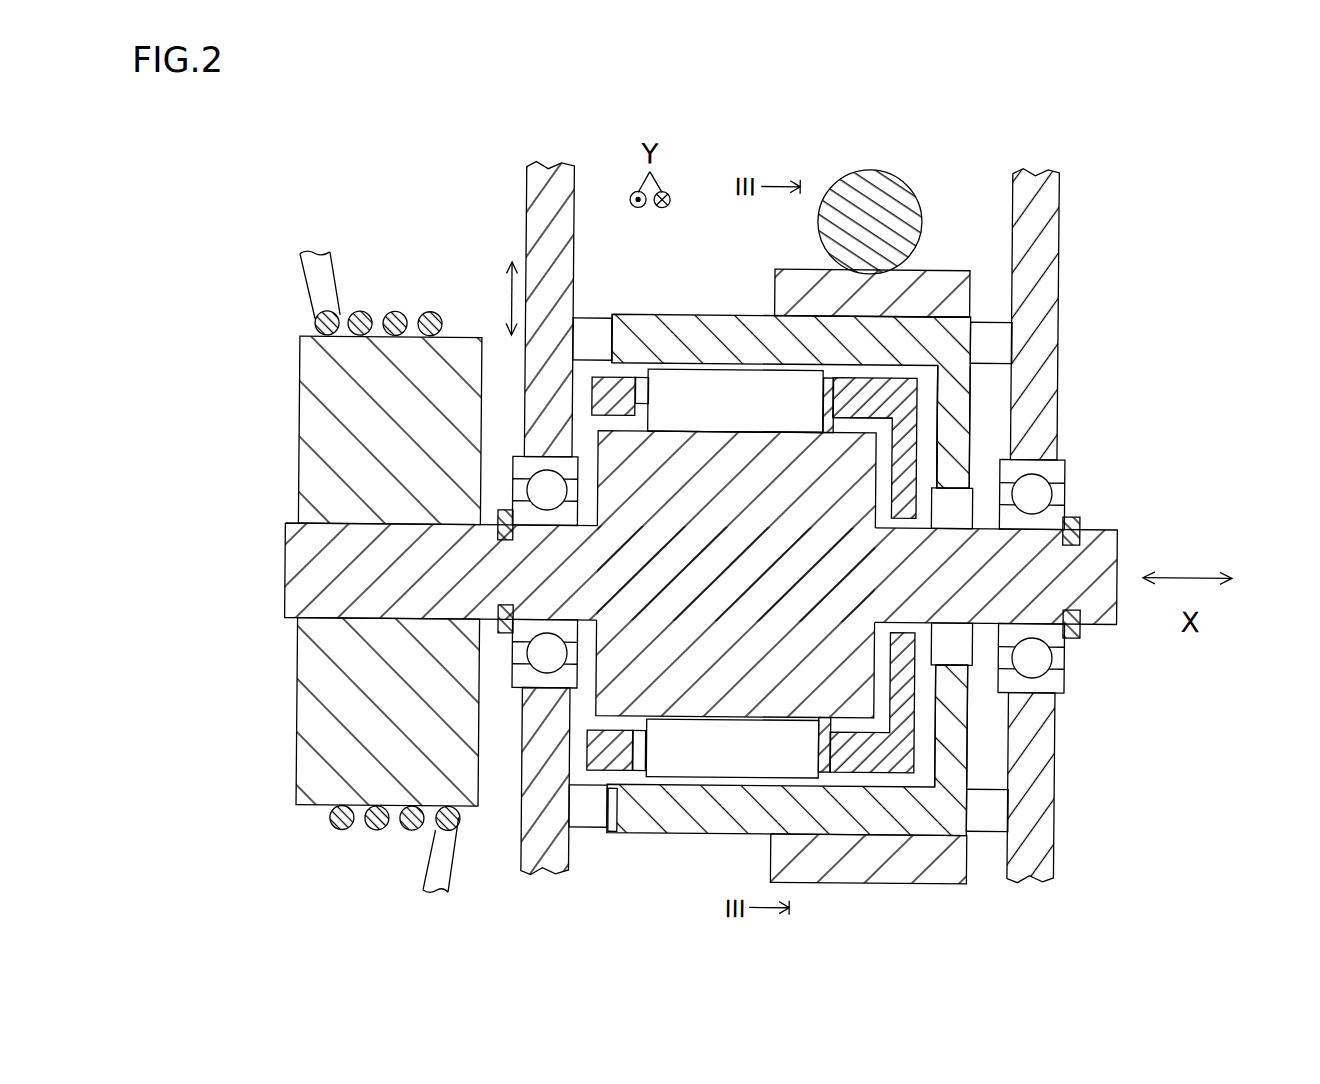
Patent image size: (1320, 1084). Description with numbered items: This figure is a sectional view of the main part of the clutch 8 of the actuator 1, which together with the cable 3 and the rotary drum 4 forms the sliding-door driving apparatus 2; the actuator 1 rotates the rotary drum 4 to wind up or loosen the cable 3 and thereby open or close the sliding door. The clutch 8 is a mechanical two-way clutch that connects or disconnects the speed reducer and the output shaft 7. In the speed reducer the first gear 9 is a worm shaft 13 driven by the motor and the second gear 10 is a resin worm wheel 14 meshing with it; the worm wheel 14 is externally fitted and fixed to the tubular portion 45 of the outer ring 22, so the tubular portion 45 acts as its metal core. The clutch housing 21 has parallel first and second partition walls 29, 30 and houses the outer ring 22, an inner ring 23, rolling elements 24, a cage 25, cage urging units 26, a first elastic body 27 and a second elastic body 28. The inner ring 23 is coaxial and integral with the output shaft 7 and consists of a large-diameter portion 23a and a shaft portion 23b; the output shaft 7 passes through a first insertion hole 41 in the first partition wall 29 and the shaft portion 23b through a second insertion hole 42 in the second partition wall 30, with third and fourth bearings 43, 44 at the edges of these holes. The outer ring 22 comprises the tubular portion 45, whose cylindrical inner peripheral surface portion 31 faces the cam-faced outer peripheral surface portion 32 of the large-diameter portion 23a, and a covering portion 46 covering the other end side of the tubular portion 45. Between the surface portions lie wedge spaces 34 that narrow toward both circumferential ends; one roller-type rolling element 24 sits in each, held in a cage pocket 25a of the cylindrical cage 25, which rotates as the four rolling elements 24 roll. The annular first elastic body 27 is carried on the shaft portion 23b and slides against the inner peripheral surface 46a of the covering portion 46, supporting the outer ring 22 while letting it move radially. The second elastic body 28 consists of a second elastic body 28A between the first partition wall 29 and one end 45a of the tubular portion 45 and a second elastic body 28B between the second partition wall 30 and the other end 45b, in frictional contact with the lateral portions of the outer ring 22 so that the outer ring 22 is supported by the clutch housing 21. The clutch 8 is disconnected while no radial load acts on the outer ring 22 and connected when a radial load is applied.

The actuator 1 is at (533, 899).
The sliding-door driving apparatus 2 is at (983, 172).
The cable 3 is at (360, 315).
The rotary drum 4 is at (312, 720).
The output shaft 7 is at (290, 582).
The clutch 8 is at (679, 848).
The first gear 9 is at (890, 205).
The second gear 10 is at (886, 255).
The worm shaft 13 is at (902, 186).
The worm wheel 14 is at (958, 280).
The clutch housing 21 is at (812, 522).
The outer ring 22 is at (895, 575).
The inner ring 23 is at (930, 576).
The large-diameter portion 23a is at (830, 488).
The shaft portion 23b is at (1017, 576).
The rolling element 24 is at (723, 390).
The cage 25 is at (888, 758).
The cage pocket 25a is at (644, 406).
The cage urging unit 26 is at (826, 428).
The first elastic body 27 is at (955, 648).
The second elastic body 28 is at (877, 528).
The second elastic body 28A is at (586, 332).
The second elastic body 28B is at (996, 326).
The first partition wall 29 is at (538, 189).
The second partition wall 30 is at (1049, 253).
The inner peripheral surface portion 31 is at (641, 366).
The outer peripheral surface portion 32 is at (744, 430).
The wedge space 34 is at (637, 727).
The first insertion hole 41 is at (516, 479).
The second insertion hole 42 is at (1047, 463).
The third bearing 43 is at (522, 677).
The fourth bearing 44 is at (1058, 682).
The tubular portion 45 is at (872, 360).
The one end of the tubular portion 45a is at (616, 344).
The other end of the tubular portion 45b is at (963, 336).
The covering portion 46 is at (958, 415).
The inner peripheral surface 46a is at (936, 437).